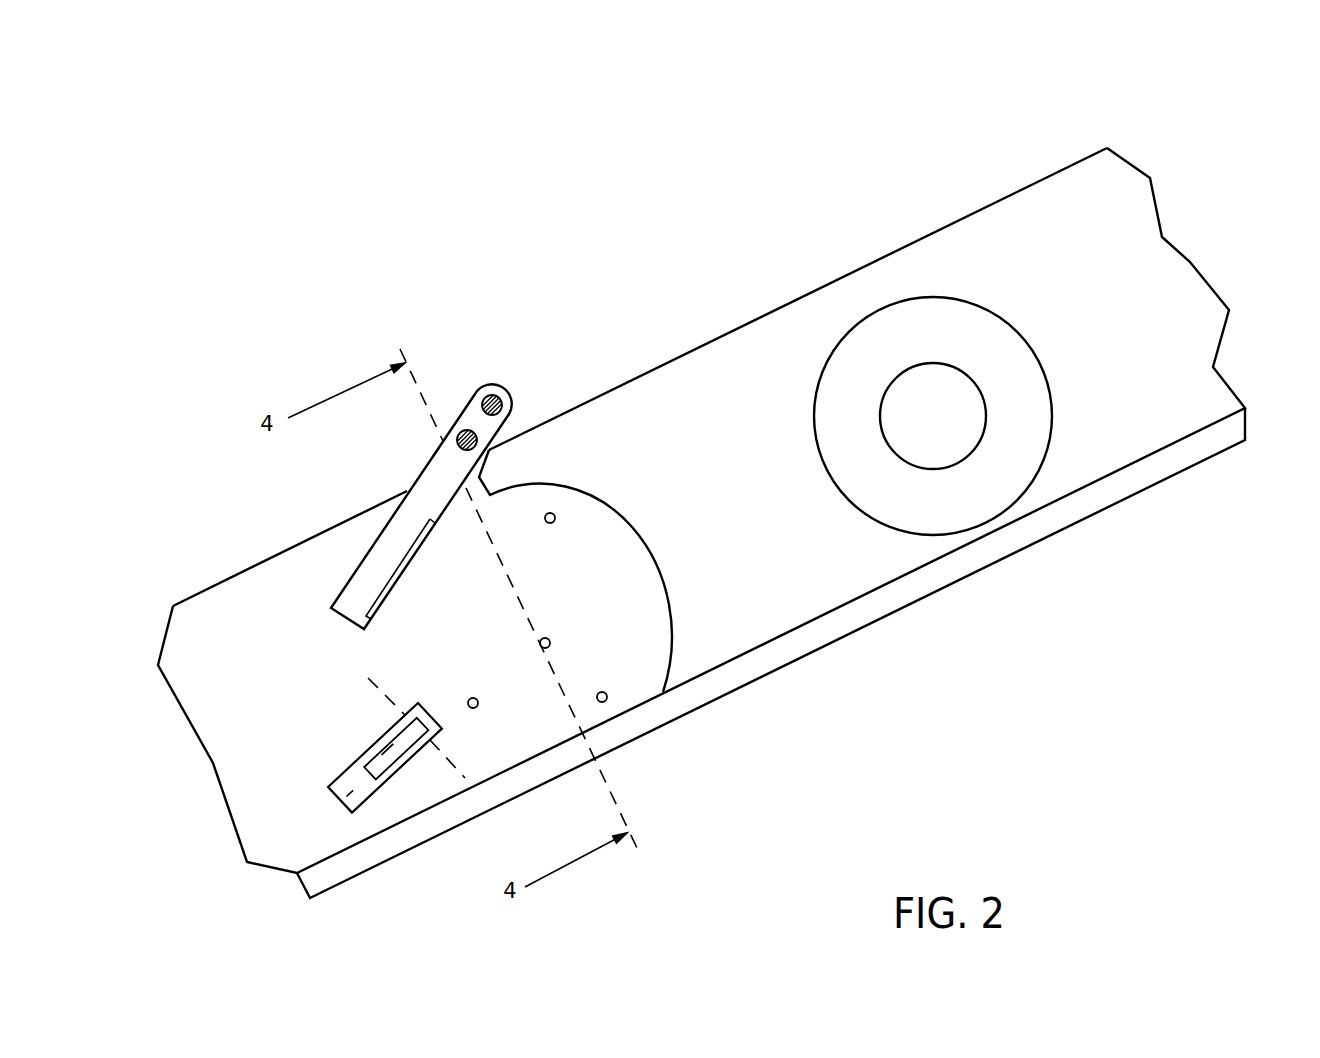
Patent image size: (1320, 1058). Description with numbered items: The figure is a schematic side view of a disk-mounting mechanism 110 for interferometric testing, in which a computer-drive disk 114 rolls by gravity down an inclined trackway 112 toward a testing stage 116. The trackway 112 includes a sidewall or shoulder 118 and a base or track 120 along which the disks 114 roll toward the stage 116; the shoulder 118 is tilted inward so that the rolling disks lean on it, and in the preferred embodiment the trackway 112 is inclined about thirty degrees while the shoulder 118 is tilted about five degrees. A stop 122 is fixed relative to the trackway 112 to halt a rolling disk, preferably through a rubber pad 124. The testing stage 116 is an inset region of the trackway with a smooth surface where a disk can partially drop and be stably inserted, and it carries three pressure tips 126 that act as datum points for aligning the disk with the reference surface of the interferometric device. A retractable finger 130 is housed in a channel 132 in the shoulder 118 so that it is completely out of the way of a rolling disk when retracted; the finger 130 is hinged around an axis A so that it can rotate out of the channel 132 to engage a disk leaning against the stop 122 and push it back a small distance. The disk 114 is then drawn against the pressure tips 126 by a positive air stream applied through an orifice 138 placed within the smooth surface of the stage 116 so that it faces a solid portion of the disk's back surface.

The disk-mounting mechanism 110 is at (626, 356).
The inclined trackway 112 is at (953, 223).
The computer-drive disk 114 is at (1030, 435).
The testing stage 116 is at (558, 602).
The shoulder 118 is at (759, 378).
The track 120 is at (927, 580).
The stop 122 is at (390, 542).
The rubber pad 124 is at (413, 563).
The pressure tips 126 is at (555, 521).
The retractable finger 130 is at (383, 758).
The channel 132 is at (337, 800).
The orifice 138 is at (541, 650).
The axis A is at (438, 752).